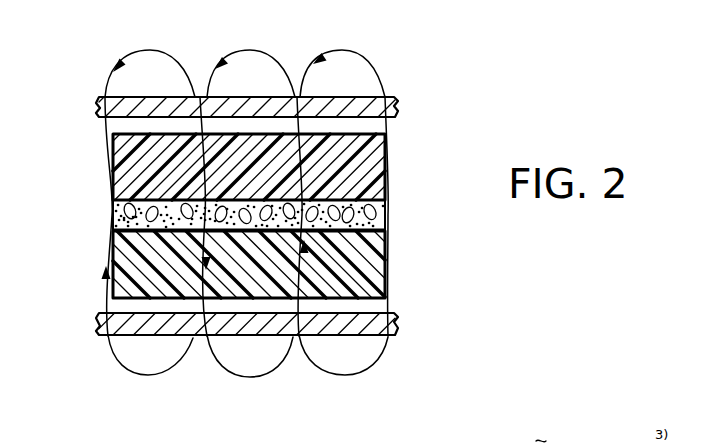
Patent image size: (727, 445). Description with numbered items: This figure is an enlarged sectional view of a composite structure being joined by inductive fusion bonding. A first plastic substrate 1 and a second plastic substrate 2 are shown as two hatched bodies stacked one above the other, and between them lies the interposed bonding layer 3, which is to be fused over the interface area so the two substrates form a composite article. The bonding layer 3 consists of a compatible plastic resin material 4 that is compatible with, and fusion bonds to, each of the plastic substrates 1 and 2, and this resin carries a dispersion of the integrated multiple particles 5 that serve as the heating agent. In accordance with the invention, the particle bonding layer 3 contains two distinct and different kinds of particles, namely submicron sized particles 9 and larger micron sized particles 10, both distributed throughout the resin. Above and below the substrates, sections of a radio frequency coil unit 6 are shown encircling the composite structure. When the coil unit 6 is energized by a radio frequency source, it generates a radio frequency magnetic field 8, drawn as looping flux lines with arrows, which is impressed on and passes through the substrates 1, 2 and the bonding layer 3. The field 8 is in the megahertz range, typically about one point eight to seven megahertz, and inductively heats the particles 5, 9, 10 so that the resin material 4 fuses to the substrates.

The first plastic substrate 1 is at (387, 174).
The second plastic substrate 2 is at (387, 272).
The bonding layer 3 is at (387, 215).
The plastic resin material 4 is at (119, 205).
The integrated multiple particles 5 is at (387, 204).
The radio frequency coil unit 6 is at (97, 107).
The radio frequency magnetic field 8 is at (341, 50).
The submicron sized particles 9 is at (118, 225).
The micron sized particles 10 is at (119, 215).